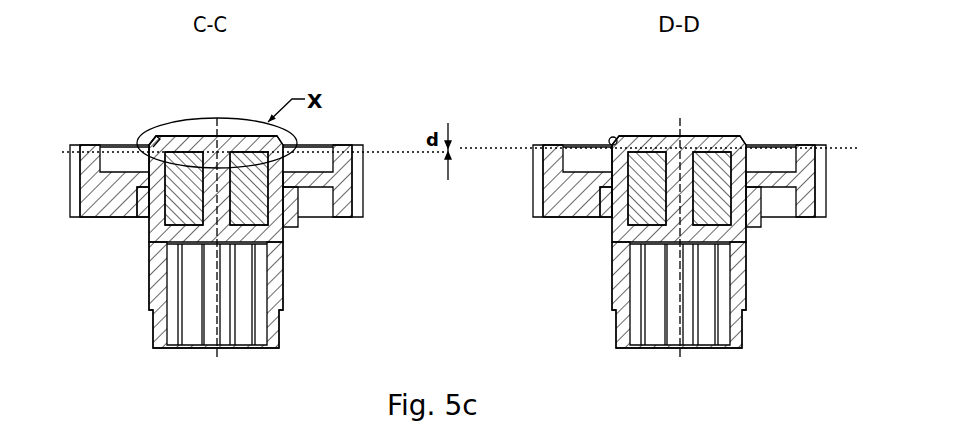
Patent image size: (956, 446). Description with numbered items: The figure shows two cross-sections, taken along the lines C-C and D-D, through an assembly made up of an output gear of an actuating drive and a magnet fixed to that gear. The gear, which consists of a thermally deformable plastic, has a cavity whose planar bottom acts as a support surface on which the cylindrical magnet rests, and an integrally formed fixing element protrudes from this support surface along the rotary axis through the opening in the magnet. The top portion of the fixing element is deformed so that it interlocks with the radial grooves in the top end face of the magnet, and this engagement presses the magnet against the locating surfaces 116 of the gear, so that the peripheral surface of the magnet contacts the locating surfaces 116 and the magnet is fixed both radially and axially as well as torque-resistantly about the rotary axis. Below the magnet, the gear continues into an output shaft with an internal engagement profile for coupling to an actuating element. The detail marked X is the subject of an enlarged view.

The locating surfaces 116 is at (148, 221).